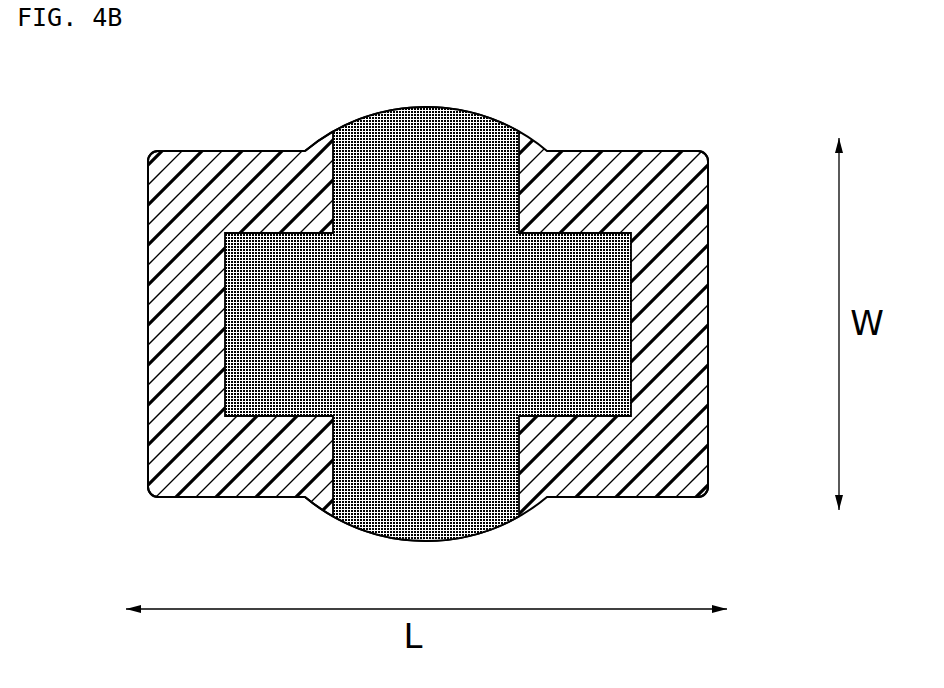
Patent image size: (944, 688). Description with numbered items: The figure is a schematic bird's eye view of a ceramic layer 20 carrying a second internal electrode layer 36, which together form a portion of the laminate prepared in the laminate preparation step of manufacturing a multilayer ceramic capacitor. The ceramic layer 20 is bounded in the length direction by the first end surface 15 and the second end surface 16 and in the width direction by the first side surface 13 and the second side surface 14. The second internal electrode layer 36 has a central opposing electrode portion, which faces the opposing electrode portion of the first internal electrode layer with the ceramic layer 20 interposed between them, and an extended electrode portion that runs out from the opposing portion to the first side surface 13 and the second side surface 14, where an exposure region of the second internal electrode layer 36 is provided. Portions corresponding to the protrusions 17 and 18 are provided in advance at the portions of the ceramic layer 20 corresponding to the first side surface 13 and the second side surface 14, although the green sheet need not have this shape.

The first side surface 13 is at (243, 497).
The second side surface 14 is at (233, 150).
The first end surface 15 is at (146, 357).
The second end surface 16 is at (708, 338).
The protrusion 17 is at (308, 500).
The protrusion 18 is at (318, 140).
The ceramic layer 20 is at (615, 165).
The second internal electrode layer 36 is at (572, 383).